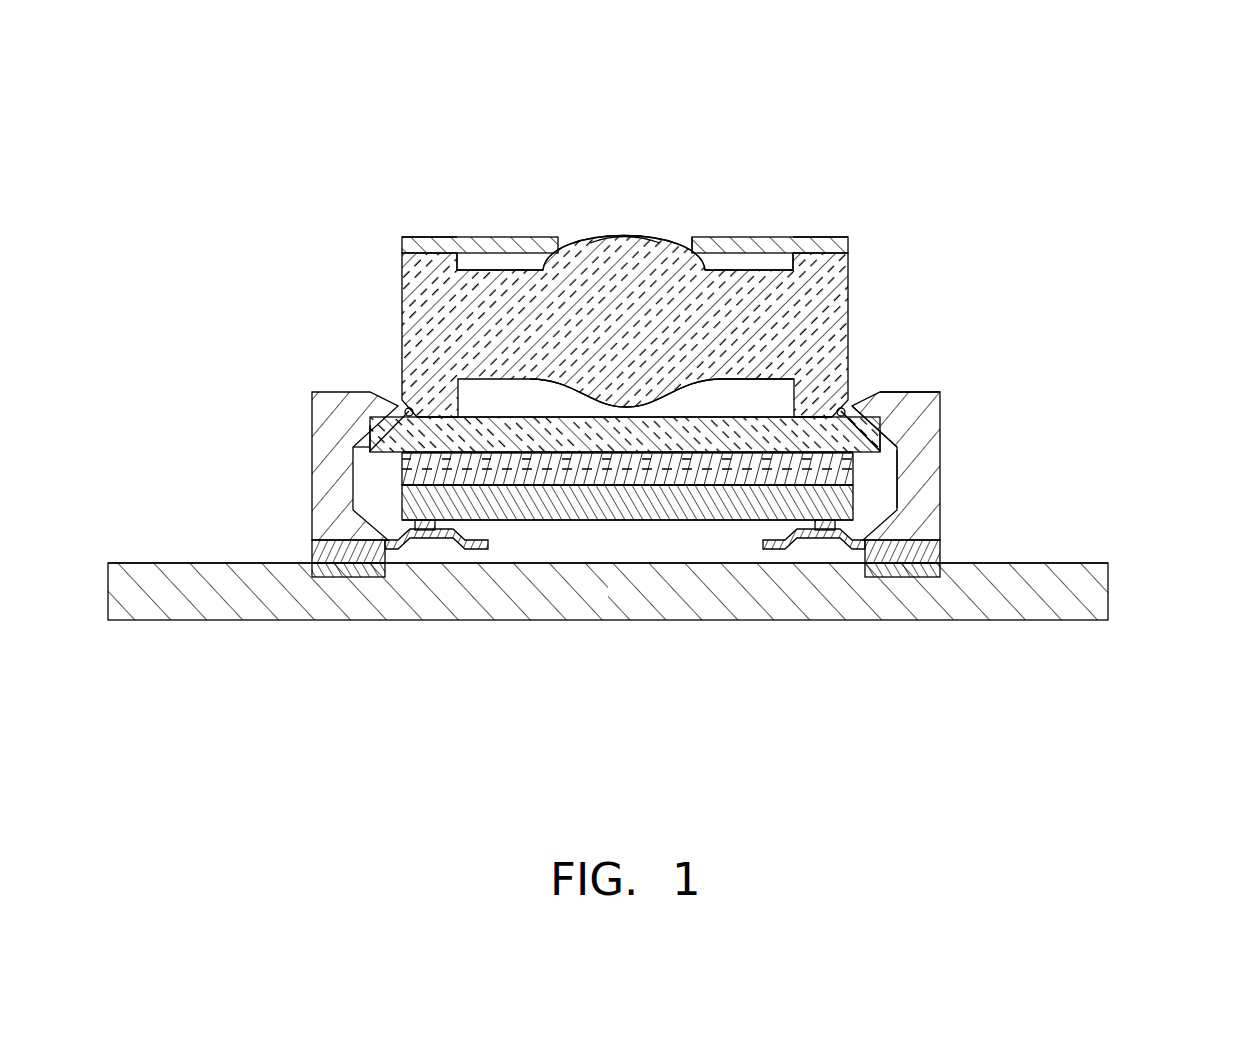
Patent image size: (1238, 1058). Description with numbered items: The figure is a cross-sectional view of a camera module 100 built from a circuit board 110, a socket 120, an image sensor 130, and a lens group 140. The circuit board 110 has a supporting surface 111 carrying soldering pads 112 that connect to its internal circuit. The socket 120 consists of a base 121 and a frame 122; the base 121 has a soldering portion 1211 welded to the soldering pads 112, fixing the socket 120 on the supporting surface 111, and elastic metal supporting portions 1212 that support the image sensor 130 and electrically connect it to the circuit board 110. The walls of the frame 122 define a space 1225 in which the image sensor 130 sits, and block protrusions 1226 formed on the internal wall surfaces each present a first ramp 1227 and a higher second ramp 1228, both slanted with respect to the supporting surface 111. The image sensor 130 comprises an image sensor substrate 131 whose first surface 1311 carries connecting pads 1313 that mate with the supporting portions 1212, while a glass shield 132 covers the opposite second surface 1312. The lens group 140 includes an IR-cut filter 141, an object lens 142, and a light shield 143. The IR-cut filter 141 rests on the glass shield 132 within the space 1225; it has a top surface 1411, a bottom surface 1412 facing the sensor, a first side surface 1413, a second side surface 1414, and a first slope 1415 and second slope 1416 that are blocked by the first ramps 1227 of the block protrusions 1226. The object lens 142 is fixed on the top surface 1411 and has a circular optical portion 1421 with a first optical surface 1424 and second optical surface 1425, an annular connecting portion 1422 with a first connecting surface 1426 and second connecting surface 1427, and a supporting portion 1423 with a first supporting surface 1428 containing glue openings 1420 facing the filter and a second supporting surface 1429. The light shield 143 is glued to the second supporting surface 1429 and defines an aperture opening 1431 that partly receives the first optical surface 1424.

The camera module 100 is at (886, 98).
The circuit board 110 is at (659, 604).
The supporting surface 111 is at (1102, 560).
The soldering pads 112 is at (350, 578).
The socket 120 is at (732, 446).
The base 121 is at (704, 538).
The soldering portion 1211 is at (905, 570).
The elastic metal supporting portions 1212 is at (905, 552).
The frame 122 is at (696, 427).
The space 1225 is at (898, 472).
The block protrusions 1226 is at (959, 381).
The first ramp 1227 is at (893, 443).
The second ramp 1228 is at (876, 389).
The image sensor 130 is at (625, 595).
The image sensor substrate 131 is at (627, 585).
The first surface 1311 is at (703, 524).
The second surface 1312 is at (510, 492).
The connecting pads 1313 is at (798, 546).
The glass shield 132 is at (580, 476).
The lens group 140 is at (594, 416).
The IR-cut filter 141 is at (619, 488).
The top surface 1411 is at (836, 456).
The bottom surface 1412 is at (818, 438).
The first side surface 1413 is at (862, 432).
The second side surface 1414 is at (352, 444).
The first slope 1415 is at (860, 442).
The second slope 1416 is at (369, 426).
The glue openings 1420 is at (404, 411).
The object lens 142 is at (581, 277).
The optical portion 1421 is at (641, 262).
The connecting portion 1422 is at (515, 266).
The supporting portion 1423 is at (446, 250).
The first optical surface 1424 is at (670, 398).
The second optical surface 1425 is at (597, 236).
The first connecting surface 1426 is at (764, 375).
The second connecting surface 1427 is at (744, 263).
The first supporting surface 1428 is at (802, 410).
The second supporting surface 1429 is at (840, 243).
The light shield 143 is at (576, 212).
The aperture opening 1431 is at (680, 252).